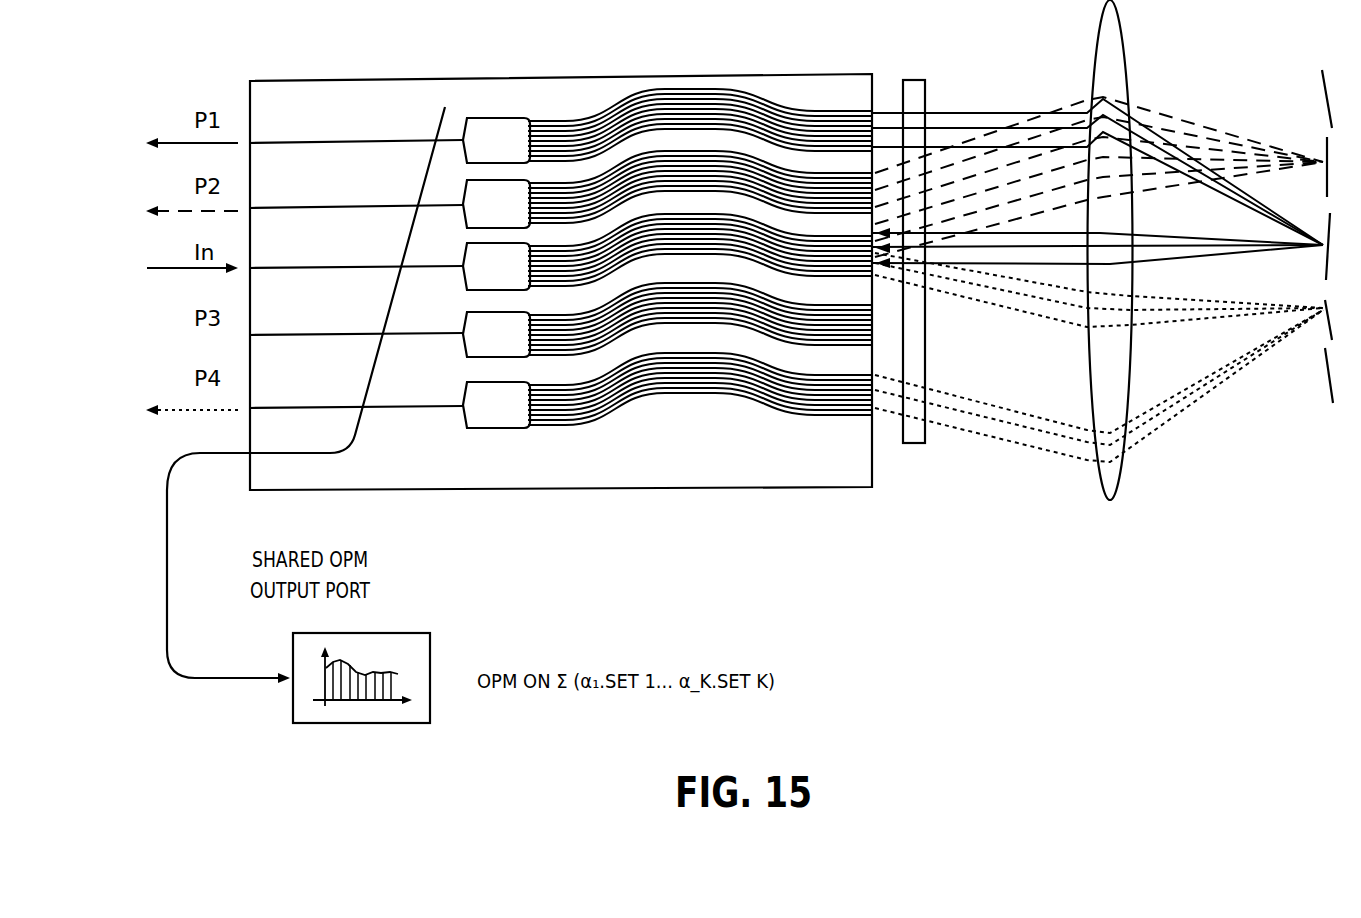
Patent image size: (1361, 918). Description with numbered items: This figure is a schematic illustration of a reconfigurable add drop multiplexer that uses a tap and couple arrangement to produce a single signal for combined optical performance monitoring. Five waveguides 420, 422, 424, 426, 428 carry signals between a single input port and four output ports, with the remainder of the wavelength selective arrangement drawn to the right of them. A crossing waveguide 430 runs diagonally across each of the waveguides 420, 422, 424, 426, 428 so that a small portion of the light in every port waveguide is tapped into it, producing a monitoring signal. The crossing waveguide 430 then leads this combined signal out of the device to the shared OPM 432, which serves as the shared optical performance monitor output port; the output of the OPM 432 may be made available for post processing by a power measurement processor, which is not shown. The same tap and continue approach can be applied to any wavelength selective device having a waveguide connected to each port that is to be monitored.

The waveguide 420 is at (308, 140).
The waveguide 422 is at (308, 207).
The waveguide 424 is at (308, 265).
The waveguide 426 is at (308, 334).
The waveguide 428 is at (308, 409).
The crossing waveguide 430 is at (434, 122).
The OPM 432 is at (415, 632).